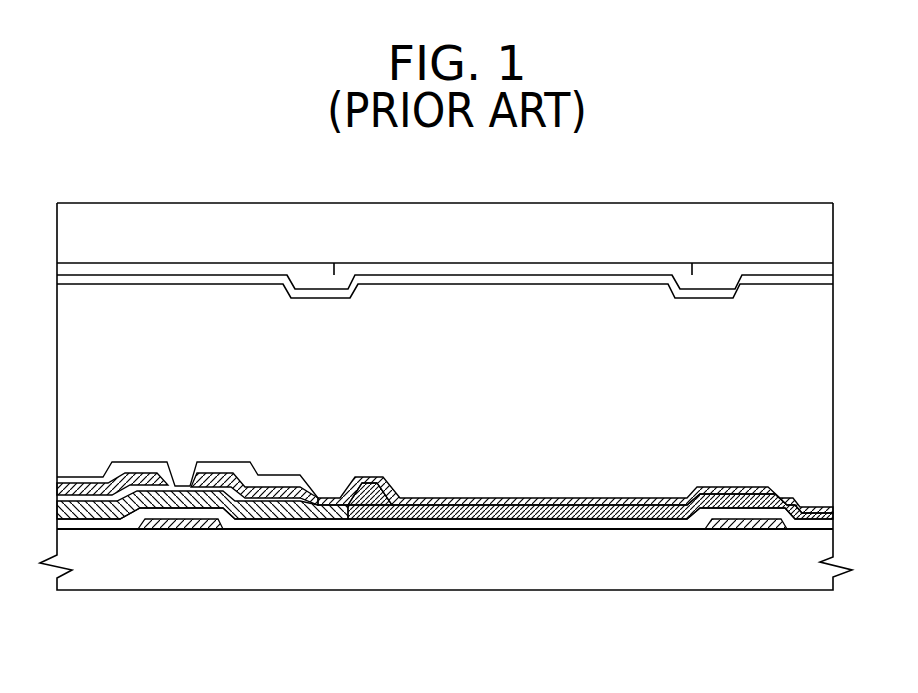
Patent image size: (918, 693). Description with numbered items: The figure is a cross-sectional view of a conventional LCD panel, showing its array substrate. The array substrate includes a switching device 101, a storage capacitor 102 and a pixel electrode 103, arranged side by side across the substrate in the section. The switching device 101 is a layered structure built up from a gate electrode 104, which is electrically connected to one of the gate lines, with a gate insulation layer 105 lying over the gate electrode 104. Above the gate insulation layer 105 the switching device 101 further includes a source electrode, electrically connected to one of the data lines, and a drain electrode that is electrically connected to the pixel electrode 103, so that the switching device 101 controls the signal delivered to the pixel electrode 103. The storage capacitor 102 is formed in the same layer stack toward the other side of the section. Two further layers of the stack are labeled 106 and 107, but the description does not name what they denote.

The passivation layer 101 is at (234, 447).
The gate line 102 is at (732, 522).
The pixel electrode 103 is at (633, 502).
The gate electrode 104 is at (175, 531).
The gate insulating layer 105 is at (230, 522).
The semiconductor layer 106 is at (283, 520).
The source/drain electrode 107 is at (90, 480).